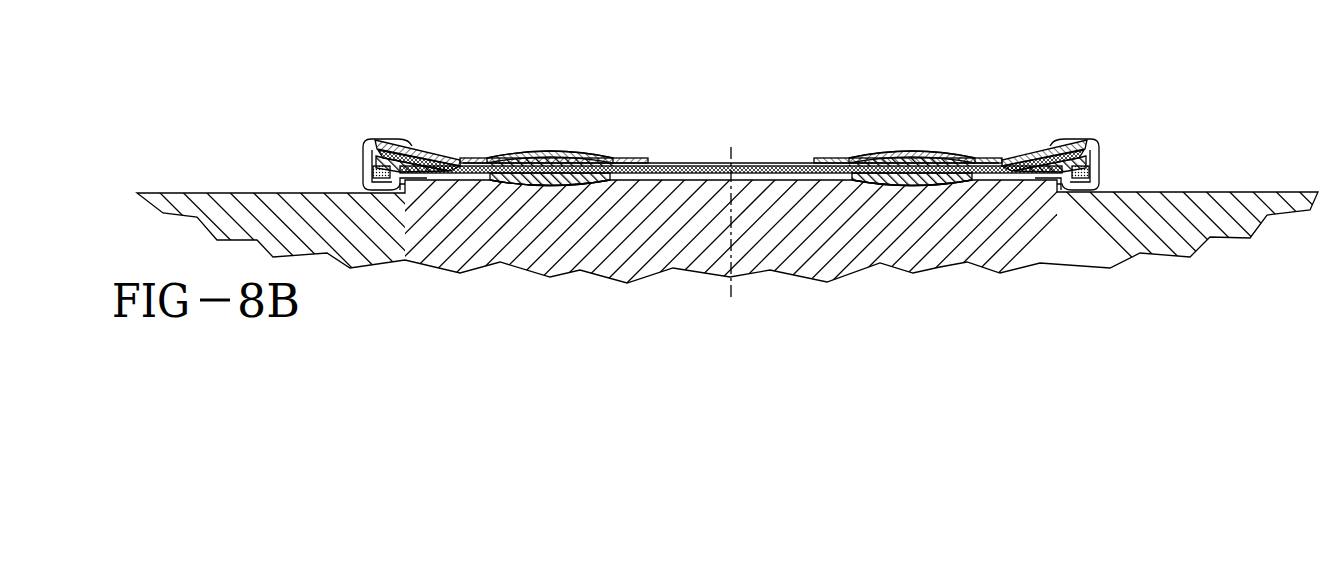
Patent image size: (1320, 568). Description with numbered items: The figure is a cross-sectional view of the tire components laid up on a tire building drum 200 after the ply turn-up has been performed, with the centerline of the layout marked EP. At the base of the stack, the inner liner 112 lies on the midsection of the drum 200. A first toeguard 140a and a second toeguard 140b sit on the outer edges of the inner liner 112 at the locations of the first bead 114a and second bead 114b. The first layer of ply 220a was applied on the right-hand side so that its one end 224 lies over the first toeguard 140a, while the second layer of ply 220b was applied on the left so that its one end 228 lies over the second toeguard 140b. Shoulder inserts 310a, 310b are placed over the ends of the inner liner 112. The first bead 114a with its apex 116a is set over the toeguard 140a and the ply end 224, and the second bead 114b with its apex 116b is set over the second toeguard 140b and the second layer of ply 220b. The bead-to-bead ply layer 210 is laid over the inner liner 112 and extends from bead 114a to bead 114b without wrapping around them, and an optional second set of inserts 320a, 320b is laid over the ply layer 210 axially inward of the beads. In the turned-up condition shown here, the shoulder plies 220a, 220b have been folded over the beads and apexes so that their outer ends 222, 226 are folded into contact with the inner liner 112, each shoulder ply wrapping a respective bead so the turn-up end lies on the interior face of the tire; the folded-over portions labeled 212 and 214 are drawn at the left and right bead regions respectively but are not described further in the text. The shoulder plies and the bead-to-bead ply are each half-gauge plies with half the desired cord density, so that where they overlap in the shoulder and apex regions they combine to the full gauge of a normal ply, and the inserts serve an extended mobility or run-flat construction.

The tire building drum 200 is at (680, 247).
The ply layer 210 is at (780, 163).
The inner liner 112 is at (682, 162).
The second end of second ply layer 226 is at (648, 158).
The second end of first ply layer 222 is at (820, 157).
The second layer of ply 220b is at (517, 157).
The first layer of ply 220a is at (943, 158).
The second insert 320b is at (550, 155).
The second insert 320a is at (908, 155).
The shoulder insert 310b is at (550, 176).
The shoulder insert 310a is at (914, 178).
The clamp plate 212 is at (388, 139).
The clamp plate 214 is at (1075, 139).
The second apex 116b is at (417, 158).
The first apex 116a is at (1045, 158).
The second bead 114b is at (376, 170).
The first bead 114a is at (1088, 172).
The second toeguard 140b is at (363, 182).
The first toeguard 140a is at (1103, 183).
The one end of second ply layer 228 is at (421, 175).
The one end of first ply layer 224 is at (1040, 172).
The equatorial plane EP is at (732, 224).